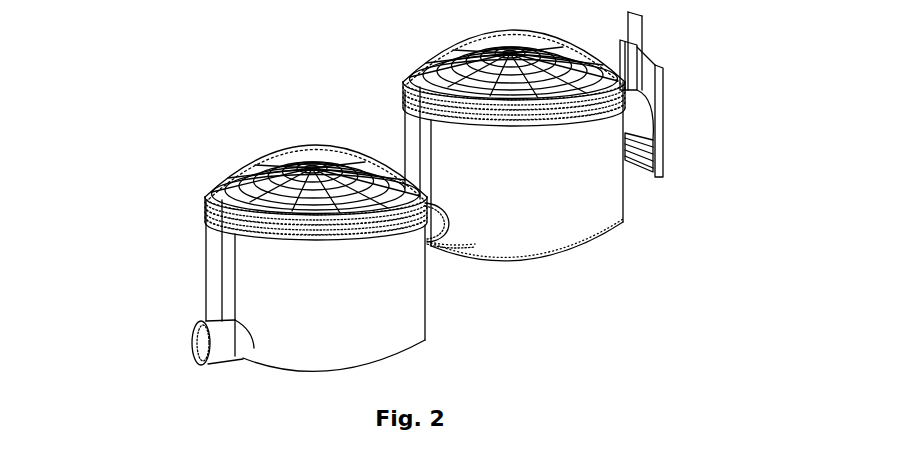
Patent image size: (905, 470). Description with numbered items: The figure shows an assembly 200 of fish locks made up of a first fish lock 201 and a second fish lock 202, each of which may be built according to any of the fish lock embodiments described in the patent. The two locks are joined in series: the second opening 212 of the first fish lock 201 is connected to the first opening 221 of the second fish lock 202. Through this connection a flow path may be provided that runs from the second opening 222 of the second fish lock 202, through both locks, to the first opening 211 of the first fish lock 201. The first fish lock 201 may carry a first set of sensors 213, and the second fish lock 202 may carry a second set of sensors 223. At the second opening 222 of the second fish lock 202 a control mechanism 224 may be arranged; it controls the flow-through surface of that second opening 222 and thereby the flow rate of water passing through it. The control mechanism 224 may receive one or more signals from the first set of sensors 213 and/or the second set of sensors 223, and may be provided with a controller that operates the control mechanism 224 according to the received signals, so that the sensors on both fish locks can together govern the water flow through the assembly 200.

The assembly of fish locks 200 is at (53, 34).
The first fish lock 201 is at (403, 312).
The second fish lock 202 is at (573, 207).
The first opening of the first fish lock 211 is at (205, 366).
The second opening of the first fish lock 212 is at (440, 274).
The first set of sensors 213 is at (228, 268).
The first opening of the second fish lock 221 is at (442, 238).
The second opening of the second fish lock 222 is at (635, 110).
The second set of sensors 223 is at (423, 127).
The control mechanism 224 is at (650, 165).